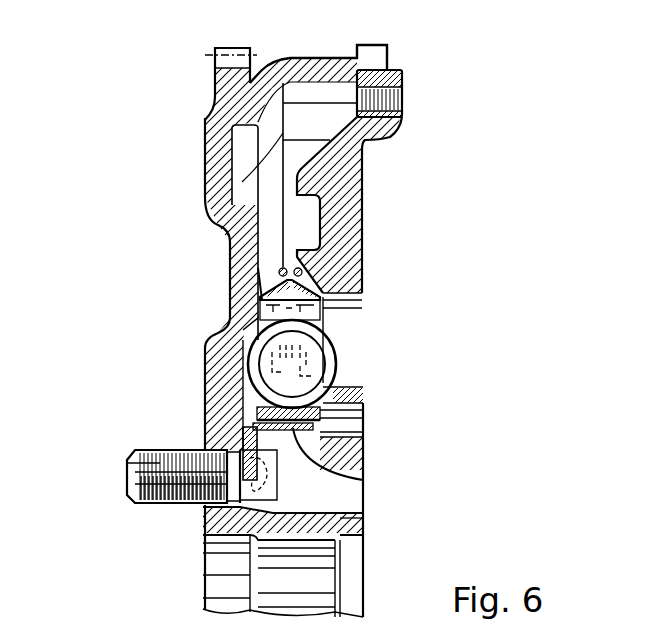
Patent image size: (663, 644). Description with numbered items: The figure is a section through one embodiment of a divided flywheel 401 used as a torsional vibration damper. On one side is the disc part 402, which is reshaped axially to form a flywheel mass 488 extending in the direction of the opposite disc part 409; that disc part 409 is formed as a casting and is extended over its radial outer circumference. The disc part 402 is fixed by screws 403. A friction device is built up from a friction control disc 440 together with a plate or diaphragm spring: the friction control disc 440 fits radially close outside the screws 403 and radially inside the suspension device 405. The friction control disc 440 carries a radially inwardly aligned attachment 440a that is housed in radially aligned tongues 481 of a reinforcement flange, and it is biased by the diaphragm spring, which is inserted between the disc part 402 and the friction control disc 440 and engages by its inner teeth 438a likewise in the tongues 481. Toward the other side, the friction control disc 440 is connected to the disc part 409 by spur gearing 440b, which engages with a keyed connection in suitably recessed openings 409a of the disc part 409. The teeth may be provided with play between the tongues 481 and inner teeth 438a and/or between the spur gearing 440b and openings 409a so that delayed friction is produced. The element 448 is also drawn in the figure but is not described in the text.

The divided flywheel 401 is at (470, 97).
The flywheel mass 488 is at (308, 60).
The disc part 402 is at (215, 182).
The suspension device 405 is at (258, 268).
The disc part 409 is at (375, 250).
The friction control disc 440 is at (340, 462).
The radially inwardly aligned attachment 440a is at (240, 379).
The spur gearing 440b is at (365, 405).
The spacer ring 448 is at (242, 402).
The radially aligned tongues 481 is at (242, 418).
The inner teeth 438a is at (240, 432).
The screws 403 is at (160, 465).
The recessed openings 409a is at (365, 430).